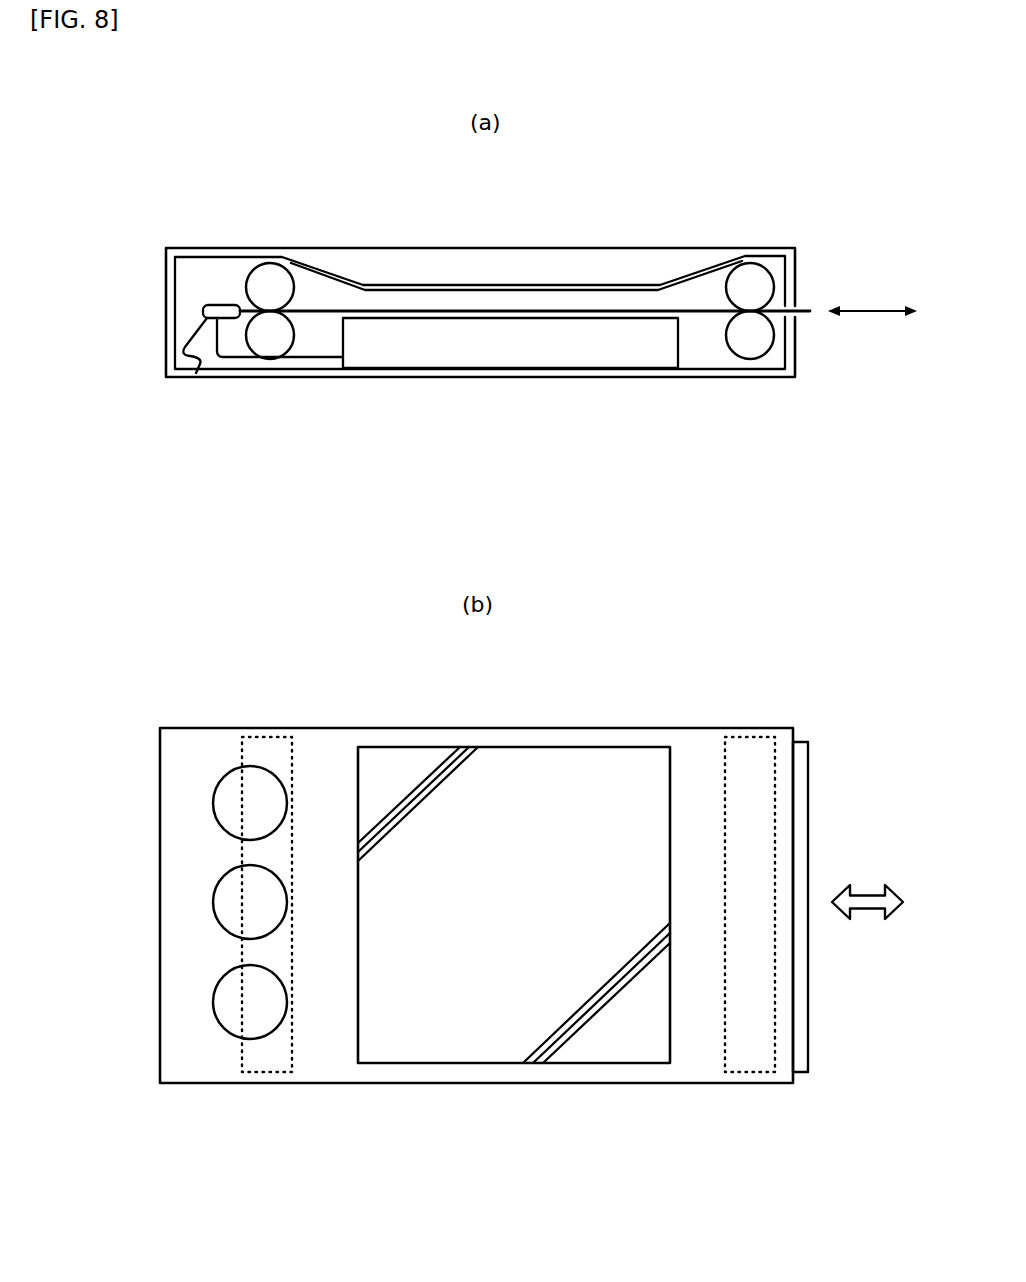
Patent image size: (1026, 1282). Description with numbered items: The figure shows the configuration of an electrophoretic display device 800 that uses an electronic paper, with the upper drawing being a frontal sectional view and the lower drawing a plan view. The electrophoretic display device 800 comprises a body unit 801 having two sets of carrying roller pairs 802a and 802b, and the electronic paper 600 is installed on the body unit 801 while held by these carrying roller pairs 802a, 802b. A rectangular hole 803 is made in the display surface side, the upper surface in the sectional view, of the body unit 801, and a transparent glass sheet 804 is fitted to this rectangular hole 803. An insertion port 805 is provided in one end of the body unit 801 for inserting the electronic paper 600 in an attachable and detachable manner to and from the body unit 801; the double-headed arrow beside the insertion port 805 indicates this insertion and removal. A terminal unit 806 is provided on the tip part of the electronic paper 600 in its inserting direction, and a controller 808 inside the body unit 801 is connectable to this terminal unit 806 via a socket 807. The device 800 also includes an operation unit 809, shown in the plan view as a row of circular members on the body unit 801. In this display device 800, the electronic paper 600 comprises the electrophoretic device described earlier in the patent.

The electrophoretic display device 800 is at (792, 190).
The body unit 801 is at (233, 254).
The carrying roller pair 802a is at (300, 260).
The carrying roller pair 802b is at (752, 256).
The electronic paper 600 is at (496, 303).
The rectangular hole 803 is at (428, 747).
The transparent glass sheet 804 is at (583, 289).
The insertion port 805 is at (797, 311).
The terminal unit 806 is at (215, 306).
The socket 807 is at (196, 372).
The controller 808 is at (478, 360).
The operation unit 809 is at (220, 766).